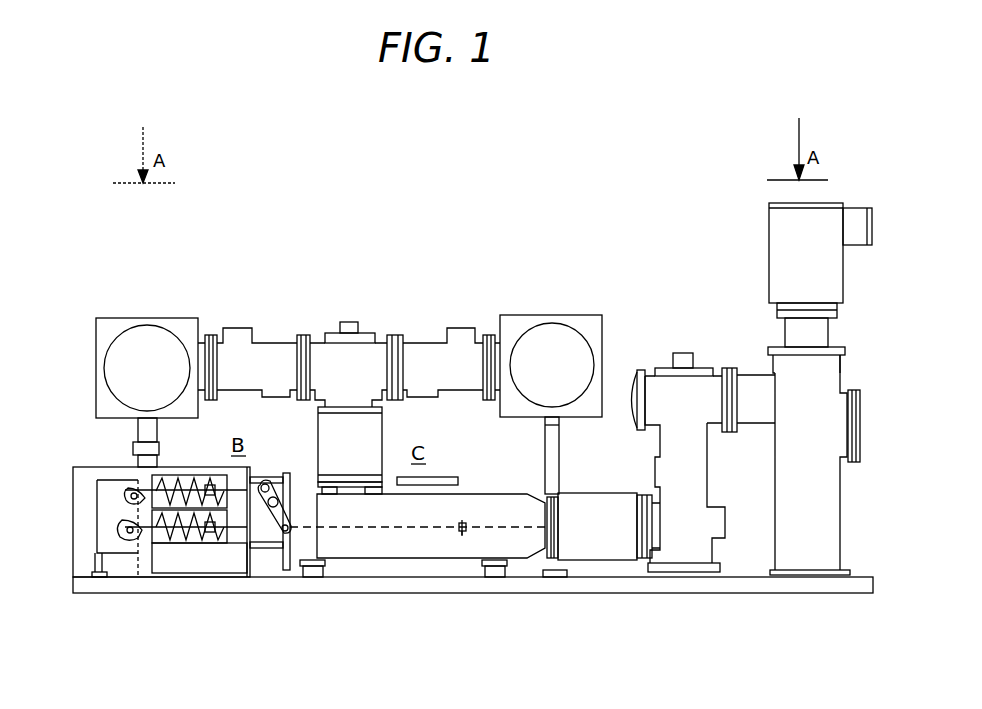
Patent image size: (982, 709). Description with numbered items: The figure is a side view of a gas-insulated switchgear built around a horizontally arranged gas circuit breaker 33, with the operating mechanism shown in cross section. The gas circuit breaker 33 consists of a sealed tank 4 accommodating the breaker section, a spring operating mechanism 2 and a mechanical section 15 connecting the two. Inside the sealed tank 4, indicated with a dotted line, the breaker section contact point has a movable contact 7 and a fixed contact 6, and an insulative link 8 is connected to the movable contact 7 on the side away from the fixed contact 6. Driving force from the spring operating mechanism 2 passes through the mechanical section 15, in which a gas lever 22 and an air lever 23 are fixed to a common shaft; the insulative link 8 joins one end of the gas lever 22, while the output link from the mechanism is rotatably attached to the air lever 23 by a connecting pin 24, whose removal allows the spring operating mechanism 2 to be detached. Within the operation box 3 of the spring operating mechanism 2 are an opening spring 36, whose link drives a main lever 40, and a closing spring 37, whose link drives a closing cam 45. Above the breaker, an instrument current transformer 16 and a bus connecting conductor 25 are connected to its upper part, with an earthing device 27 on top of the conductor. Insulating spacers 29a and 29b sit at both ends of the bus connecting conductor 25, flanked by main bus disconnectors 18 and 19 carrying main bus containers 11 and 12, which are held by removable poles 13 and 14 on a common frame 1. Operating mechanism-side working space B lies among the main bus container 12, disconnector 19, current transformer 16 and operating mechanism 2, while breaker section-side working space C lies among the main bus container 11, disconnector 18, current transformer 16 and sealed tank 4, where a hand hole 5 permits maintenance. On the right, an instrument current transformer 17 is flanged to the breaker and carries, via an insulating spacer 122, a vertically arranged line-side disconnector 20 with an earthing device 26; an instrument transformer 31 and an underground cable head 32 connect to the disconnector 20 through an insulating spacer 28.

The common frame 1 is at (746, 590).
The spring operating mechanism 2 is at (118, 622).
The operation box 3 is at (213, 470).
The sealed tank 4 is at (480, 494).
The hand hole 5 is at (446, 477).
The fixed contact 6 is at (466, 526).
The movable contact 7 is at (460, 530).
The insulative link 8 is at (380, 530).
The main bus container 11 is at (555, 335).
The main bus container 12 is at (150, 340).
The removable pole 13 is at (552, 445).
The removable pole 14 is at (143, 433).
The mechanical section 15 is at (272, 548).
The instrument current transformer 16 is at (375, 433).
The instrument current transformer 17 is at (612, 493).
The main bus disconnector 18 is at (460, 328).
The main bus disconnector 19 is at (237, 330).
The line-side disconnector 20 is at (697, 471).
The gas lever 22 is at (298, 475).
The air lever 23 is at (280, 497).
The connecting pin 24 is at (265, 484).
The bus connecting conductor 25 is at (348, 321).
The earthing device 26 is at (683, 353).
The earthing device 27 is at (350, 322).
The insulating spacer 28 is at (730, 368).
The insulating spacer 29a is at (395, 335).
The insulating spacer 29b is at (303, 335).
The instrument transformer 31 is at (775, 233).
The underground cable head 32 is at (828, 537).
The gas circuit breaker 33 is at (324, 628).
The opening spring 36 is at (177, 480).
The closing spring 37 is at (208, 548).
The main lever 40 is at (128, 497).
The closing cam 45 is at (126, 535).
The insulating spacer 122 is at (648, 577).